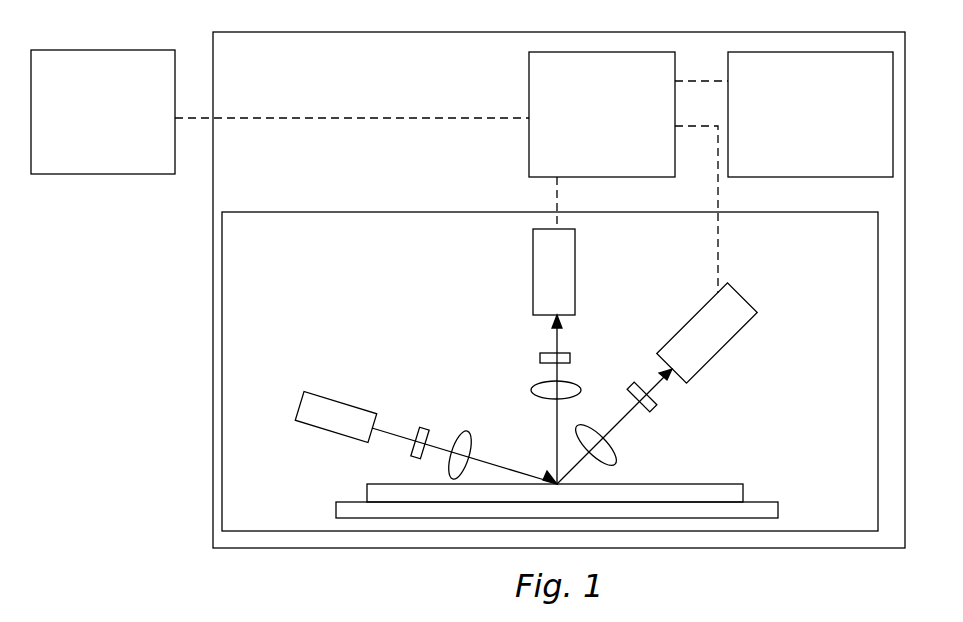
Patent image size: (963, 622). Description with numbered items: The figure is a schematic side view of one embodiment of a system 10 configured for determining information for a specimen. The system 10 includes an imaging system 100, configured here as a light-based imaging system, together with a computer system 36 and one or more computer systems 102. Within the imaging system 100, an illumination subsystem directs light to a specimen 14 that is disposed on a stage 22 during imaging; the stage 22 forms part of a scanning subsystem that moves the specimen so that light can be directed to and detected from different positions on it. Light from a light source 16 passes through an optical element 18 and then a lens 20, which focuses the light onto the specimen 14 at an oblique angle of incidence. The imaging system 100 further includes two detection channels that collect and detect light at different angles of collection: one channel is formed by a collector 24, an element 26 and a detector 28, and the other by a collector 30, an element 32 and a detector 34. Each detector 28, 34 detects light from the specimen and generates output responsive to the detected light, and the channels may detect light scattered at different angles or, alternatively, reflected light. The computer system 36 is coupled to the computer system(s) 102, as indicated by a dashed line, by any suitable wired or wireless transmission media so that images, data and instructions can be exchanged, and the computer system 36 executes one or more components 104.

The system 10 is at (275, 32).
The imaging system 100 is at (222, 320).
The computer system(s) 102 is at (103, 112).
The computer system 36 is at (602, 114).
The one or more components 104 is at (810, 114).
The specimen 14 is at (380, 484).
The light source 16 is at (300, 400).
The optical element 18 is at (428, 432).
The lens 20 is at (468, 432).
The stage 22 is at (337, 516).
The collector 24 is at (535, 386).
The element 26 is at (540, 355).
The detector 28 is at (533, 276).
The collector 30 is at (615, 457).
The element 32 is at (653, 408).
The detector 34 is at (740, 330).